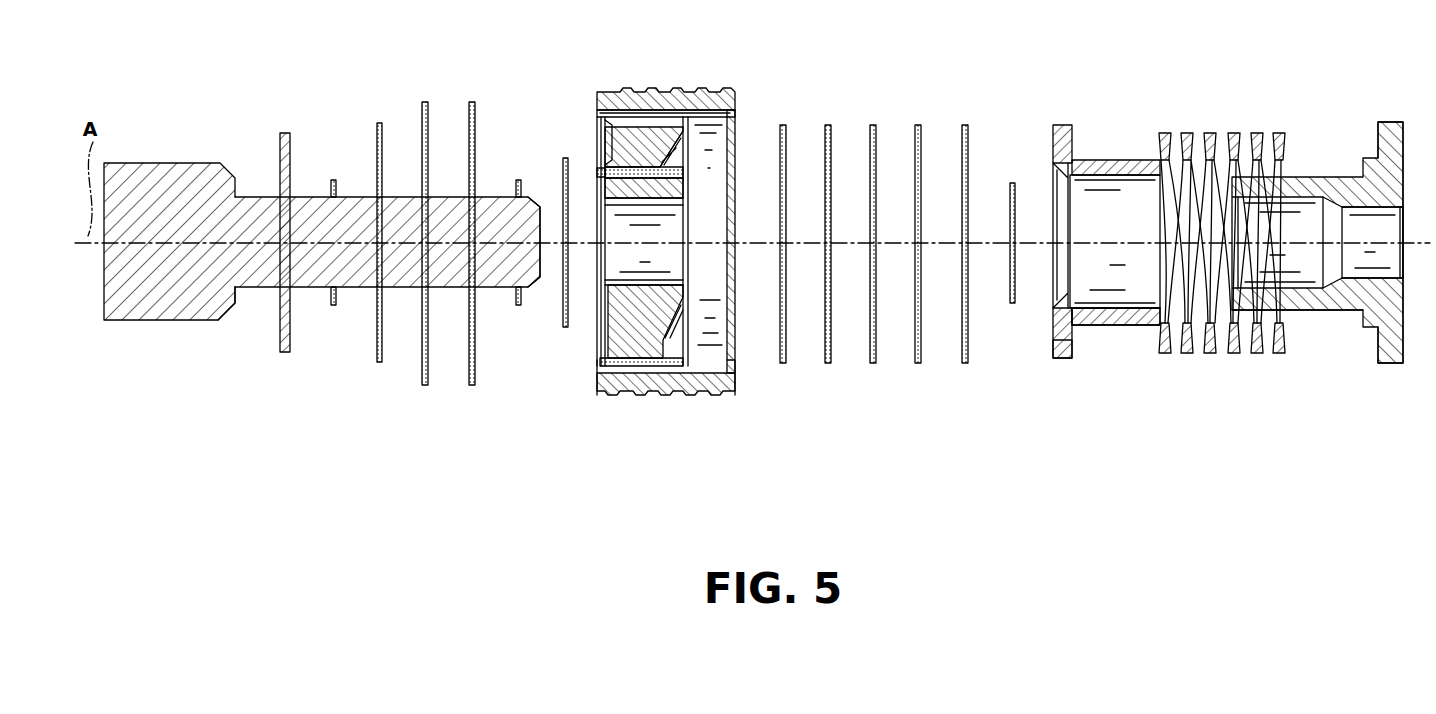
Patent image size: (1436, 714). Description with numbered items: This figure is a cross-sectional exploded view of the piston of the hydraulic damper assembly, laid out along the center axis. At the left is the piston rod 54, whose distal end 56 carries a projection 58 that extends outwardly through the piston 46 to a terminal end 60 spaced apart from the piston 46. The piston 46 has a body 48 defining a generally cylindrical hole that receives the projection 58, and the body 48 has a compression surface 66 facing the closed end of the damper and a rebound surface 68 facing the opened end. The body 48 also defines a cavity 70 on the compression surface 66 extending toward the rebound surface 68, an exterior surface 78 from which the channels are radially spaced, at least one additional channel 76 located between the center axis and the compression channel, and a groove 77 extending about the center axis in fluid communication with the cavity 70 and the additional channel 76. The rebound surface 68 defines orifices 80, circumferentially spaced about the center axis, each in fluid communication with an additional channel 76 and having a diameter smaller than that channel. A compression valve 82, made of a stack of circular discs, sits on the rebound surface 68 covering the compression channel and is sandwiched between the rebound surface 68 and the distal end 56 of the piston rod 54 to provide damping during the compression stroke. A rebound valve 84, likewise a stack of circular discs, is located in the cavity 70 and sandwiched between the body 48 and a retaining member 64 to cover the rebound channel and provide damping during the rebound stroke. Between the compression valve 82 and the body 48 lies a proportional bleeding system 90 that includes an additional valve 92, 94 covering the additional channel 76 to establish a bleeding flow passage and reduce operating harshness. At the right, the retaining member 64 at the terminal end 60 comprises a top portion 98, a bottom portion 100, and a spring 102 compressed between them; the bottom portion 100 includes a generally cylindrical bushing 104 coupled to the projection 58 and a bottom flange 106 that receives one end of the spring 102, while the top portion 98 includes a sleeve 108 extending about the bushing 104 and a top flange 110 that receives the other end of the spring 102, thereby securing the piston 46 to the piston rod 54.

The piston 46 is at (682, 258).
The body 48 is at (655, 170).
The piston rod 54 is at (117, 303).
The distal end 56 is at (236, 292).
The projection 58 is at (263, 208).
The terminal end 60 is at (537, 288).
The retaining member 64 is at (1055, 122).
The compression surface 66 is at (738, 390).
The rebound surface 68 is at (597, 396).
The cavity 70 is at (722, 376).
The additional channel 76 is at (668, 163).
The groove 77 is at (690, 331).
The exterior surface 78 is at (655, 396).
The orifice 80 is at (621, 171).
The compression valve 82 is at (330, 98).
The rebound valve 84 is at (1018, 113).
The proportional bleeding system 90 is at (510, 154).
The additional valve 92 is at (565, 328).
The additional valve 94 is at (518, 306).
The top portion 98 is at (1113, 160).
The bottom portion 100 is at (1334, 269).
The spring 102 is at (1228, 160).
The bushing 104 is at (1313, 311).
The bottom flange 106 is at (1390, 361).
The sleeve 108 is at (1110, 326).
The top flange 110 is at (1065, 358).